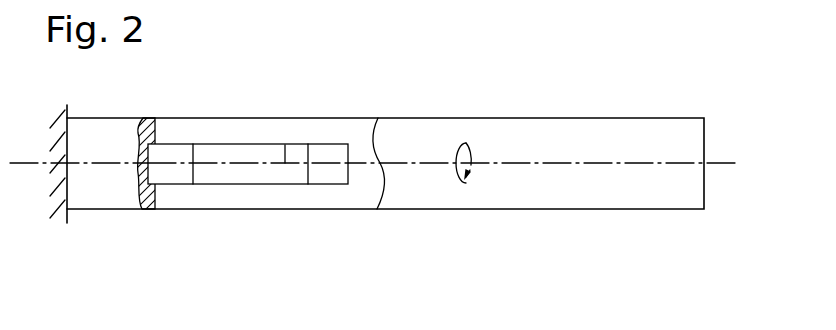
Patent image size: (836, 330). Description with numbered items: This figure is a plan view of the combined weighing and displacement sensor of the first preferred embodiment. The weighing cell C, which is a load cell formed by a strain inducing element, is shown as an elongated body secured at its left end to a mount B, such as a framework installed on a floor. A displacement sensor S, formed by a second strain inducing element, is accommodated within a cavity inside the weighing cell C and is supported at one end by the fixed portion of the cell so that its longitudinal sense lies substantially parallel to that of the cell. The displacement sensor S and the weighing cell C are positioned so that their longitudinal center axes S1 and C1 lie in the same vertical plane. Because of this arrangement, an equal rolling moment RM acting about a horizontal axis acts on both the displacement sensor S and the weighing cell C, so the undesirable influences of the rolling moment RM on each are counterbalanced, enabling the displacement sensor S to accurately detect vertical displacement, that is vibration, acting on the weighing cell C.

The weighing cell C is at (669, 117).
The longitudinal center axis of the weighing cell C1 is at (552, 160).
The mount B is at (58, 213).
The displacement sensor S is at (324, 143).
The longitudinal center axis of the displacement sensor S1 is at (285, 145).
The rolling moment RM is at (460, 142).